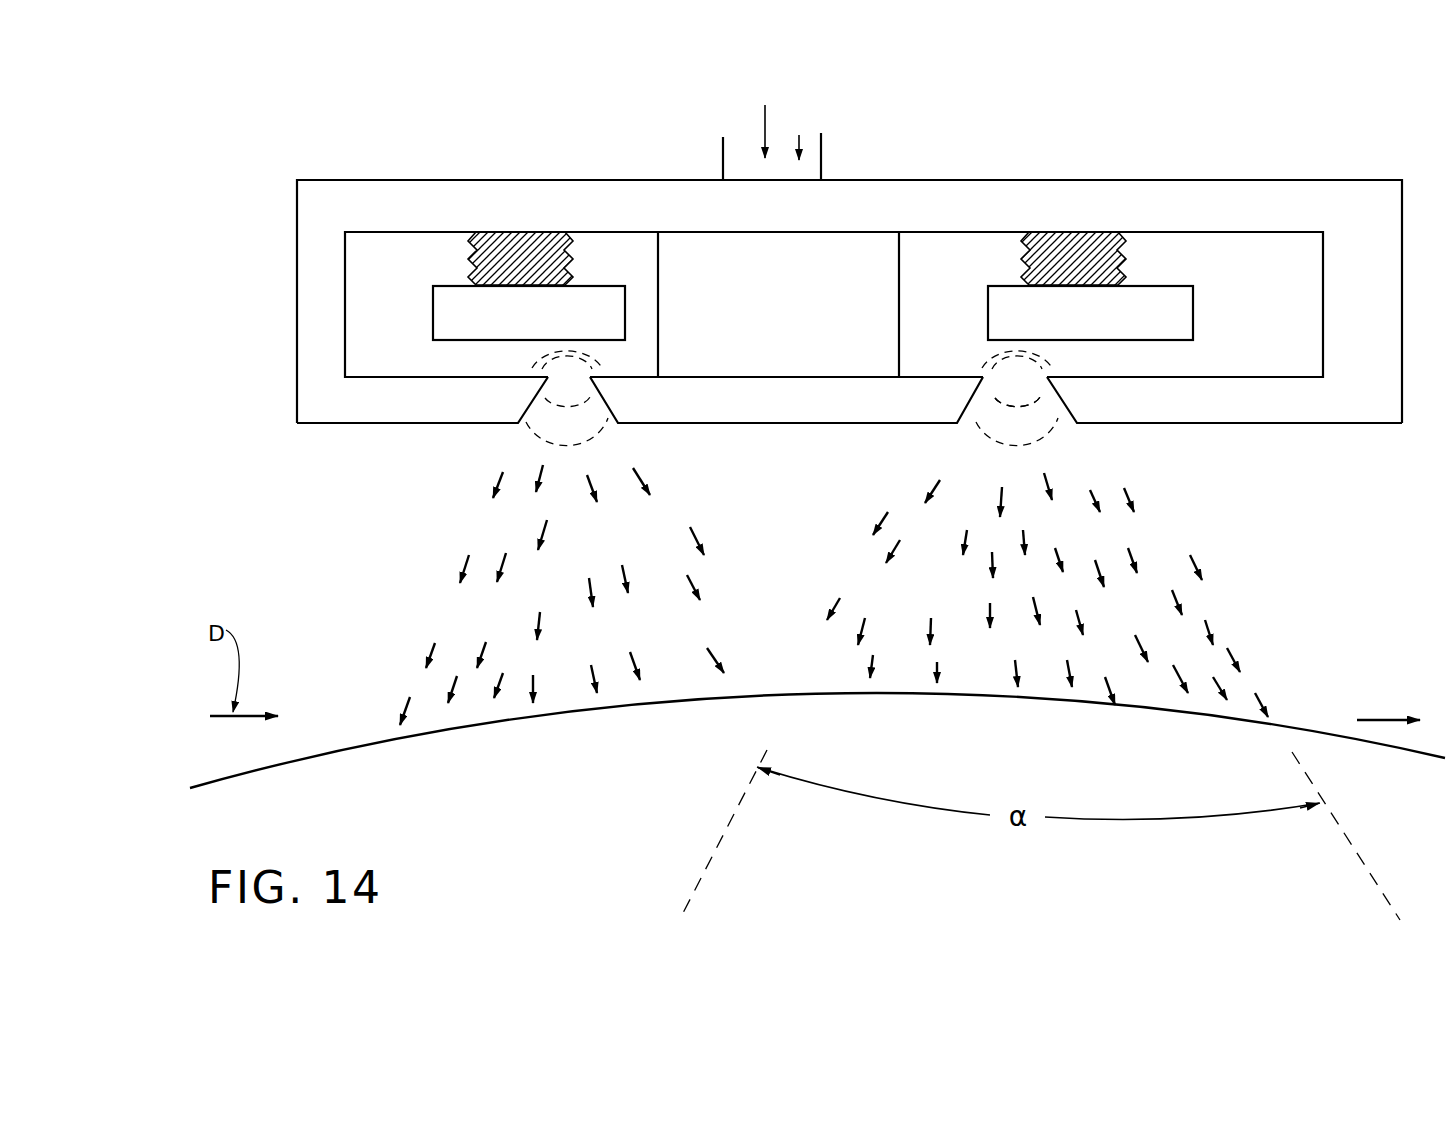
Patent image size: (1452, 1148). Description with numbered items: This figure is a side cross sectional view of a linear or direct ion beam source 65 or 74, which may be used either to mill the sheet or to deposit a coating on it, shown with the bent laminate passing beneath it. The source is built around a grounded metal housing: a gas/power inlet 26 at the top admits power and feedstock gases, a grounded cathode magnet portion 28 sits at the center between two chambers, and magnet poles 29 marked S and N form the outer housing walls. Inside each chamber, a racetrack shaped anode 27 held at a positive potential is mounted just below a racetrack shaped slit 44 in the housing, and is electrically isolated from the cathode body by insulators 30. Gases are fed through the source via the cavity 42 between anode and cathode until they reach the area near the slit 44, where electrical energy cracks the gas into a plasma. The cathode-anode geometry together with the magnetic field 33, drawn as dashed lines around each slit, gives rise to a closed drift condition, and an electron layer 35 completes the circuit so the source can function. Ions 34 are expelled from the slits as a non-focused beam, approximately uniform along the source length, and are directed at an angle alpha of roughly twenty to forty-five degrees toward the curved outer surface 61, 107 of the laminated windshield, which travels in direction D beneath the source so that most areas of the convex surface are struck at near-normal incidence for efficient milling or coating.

The gas/power inlet 26 is at (822, 146).
The racetrack shaped anode 27 is at (455, 333).
The grounded cathode magnet portion 28 is at (866, 258).
The magnet poles 29 is at (394, 406).
The insulators 30 is at (519, 245).
The magnetic field 33 is at (543, 400).
The ions 34 is at (899, 556).
The electron layer 35 is at (1010, 392).
The cavity 42 is at (1283, 340).
The racetrack shaped slit 44 is at (1022, 416).
The exterior surface 61 is at (345, 748).
The exterior surface 107 is at (817, 709).
The ion beam source 65 is at (1092, 150).
The ion beam source 74 is at (849, 259).